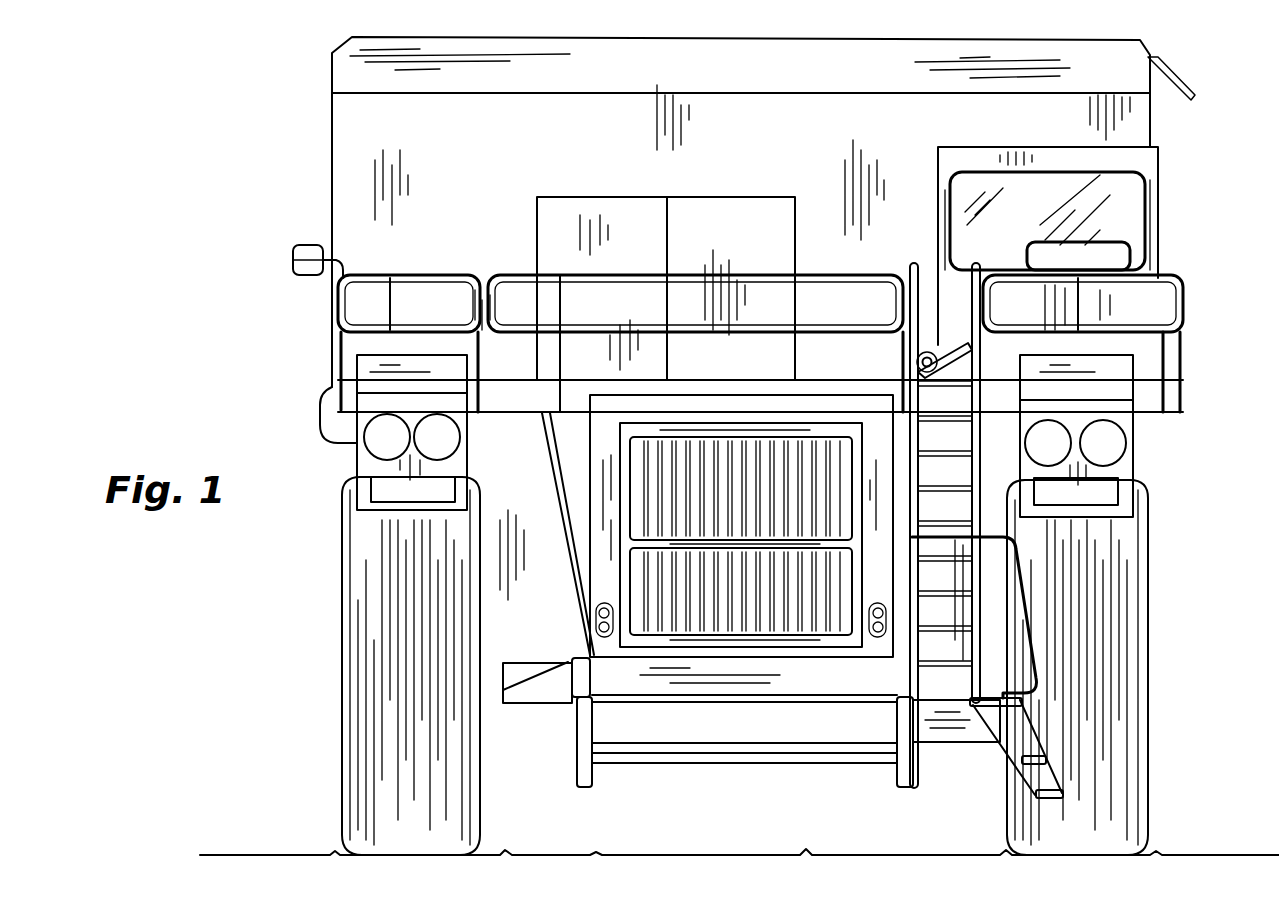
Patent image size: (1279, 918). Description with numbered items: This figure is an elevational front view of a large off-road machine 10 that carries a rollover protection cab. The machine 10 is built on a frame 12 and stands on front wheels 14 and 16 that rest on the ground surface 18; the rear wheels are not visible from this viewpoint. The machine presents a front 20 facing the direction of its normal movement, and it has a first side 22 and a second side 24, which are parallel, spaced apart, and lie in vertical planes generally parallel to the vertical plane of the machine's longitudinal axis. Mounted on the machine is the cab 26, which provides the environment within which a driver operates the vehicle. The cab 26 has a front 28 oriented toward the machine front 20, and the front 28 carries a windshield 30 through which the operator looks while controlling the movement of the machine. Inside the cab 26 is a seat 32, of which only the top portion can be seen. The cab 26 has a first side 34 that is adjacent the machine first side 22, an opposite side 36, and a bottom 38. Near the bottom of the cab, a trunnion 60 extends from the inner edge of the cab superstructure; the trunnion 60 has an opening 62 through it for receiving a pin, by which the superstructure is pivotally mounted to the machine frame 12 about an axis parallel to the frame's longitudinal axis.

The off-road machine 10 is at (1200, 78).
The frame 12 is at (688, 742).
The front wheel 14 is at (342, 700).
The front wheel 16 is at (1150, 712).
The ground surface 18 is at (1165, 853).
The front 20 is at (748, 172).
The first side 22 is at (1157, 113).
The second side 24 is at (332, 130).
The cab 26 is at (1192, 215).
The cab front 28 is at (1040, 155).
The windshield 30 is at (1130, 225).
The seat 32 is at (1058, 247).
The cab first side 34 is at (1160, 175).
The cab opposite side 36 is at (933, 175).
The cab bottom 38 is at (1037, 352).
The second trunnion 60 is at (912, 330).
The opening 62 is at (916, 362).